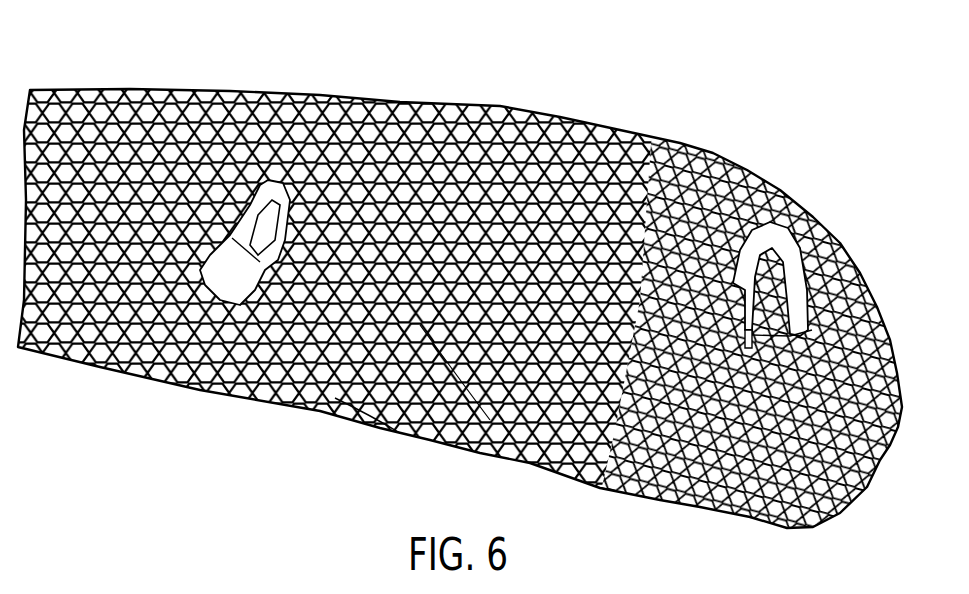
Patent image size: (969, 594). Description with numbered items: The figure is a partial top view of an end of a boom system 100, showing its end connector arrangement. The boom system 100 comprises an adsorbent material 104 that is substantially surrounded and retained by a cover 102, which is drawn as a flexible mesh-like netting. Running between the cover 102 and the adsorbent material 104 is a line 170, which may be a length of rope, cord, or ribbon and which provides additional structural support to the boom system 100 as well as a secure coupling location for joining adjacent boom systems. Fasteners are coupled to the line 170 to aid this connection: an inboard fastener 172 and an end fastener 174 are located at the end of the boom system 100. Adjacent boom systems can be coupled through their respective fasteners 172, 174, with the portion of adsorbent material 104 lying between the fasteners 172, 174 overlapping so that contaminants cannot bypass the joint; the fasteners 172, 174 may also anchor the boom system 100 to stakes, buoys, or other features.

The boom system 100 is at (470, 281).
The mesh cover 102 is at (480, 163).
The adsorbent material 104 is at (636, 178).
The line 170 is at (400, 433).
The inboard fastener 172 is at (268, 192).
The end fastener 174 is at (790, 232).